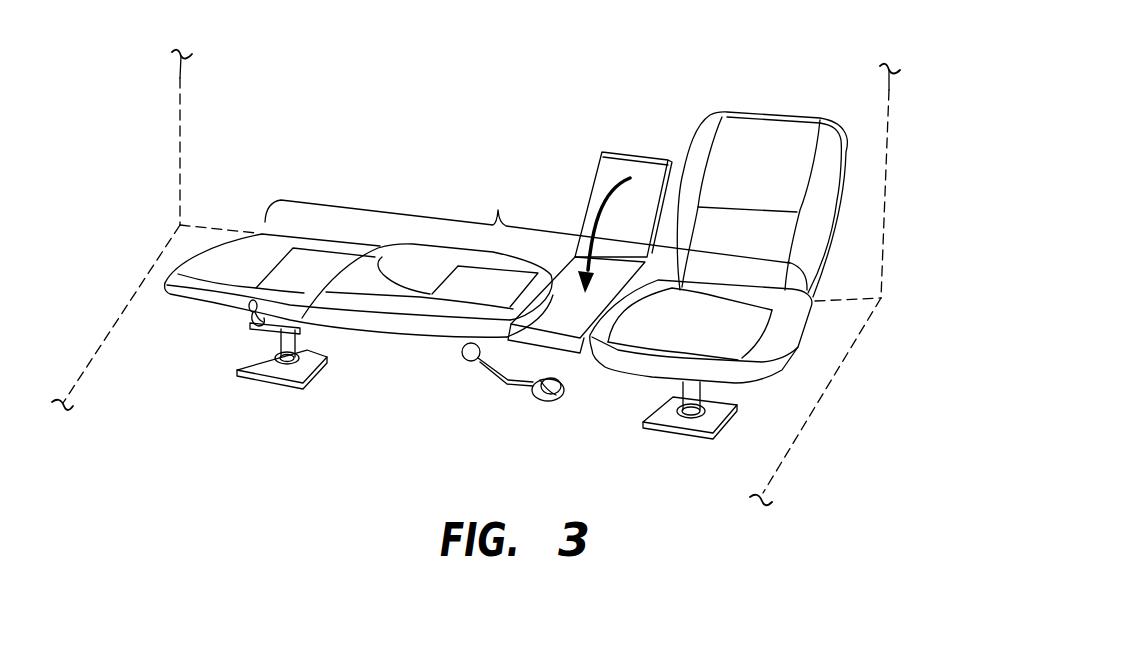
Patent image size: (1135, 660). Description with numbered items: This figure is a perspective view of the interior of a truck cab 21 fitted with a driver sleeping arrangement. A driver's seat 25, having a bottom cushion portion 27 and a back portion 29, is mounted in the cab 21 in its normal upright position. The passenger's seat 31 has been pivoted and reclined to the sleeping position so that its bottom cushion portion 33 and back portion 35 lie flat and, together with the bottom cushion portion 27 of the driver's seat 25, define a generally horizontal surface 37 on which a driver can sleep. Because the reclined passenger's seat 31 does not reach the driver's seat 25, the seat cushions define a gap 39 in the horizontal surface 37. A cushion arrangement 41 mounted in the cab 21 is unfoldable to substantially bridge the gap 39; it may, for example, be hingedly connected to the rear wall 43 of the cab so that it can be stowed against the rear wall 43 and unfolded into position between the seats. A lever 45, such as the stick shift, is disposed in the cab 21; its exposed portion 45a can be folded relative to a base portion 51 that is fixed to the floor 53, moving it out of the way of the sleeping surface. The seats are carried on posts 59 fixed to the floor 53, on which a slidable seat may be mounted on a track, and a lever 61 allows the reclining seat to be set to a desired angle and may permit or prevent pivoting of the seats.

The cab 21 is at (502, 278).
The driver's seat 25 is at (766, 210).
The bottom cushion portion 27 is at (787, 330).
The back portion 29 is at (838, 166).
The passenger's seat 31 is at (417, 254).
The bottom cushion portion 33 is at (176, 303).
The back portion 35 is at (399, 338).
The generally horizontal surface 37 is at (498, 210).
The gap 39 is at (595, 373).
The cushion arrangement 41 is at (610, 163).
The rear wall 43 is at (862, 232).
The lever 45 is at (511, 409).
The exposed portion 45a is at (480, 370).
The base portion 51 is at (563, 402).
The floor 53 is at (777, 430).
The post 59 is at (284, 360).
The lever 61 is at (243, 327).